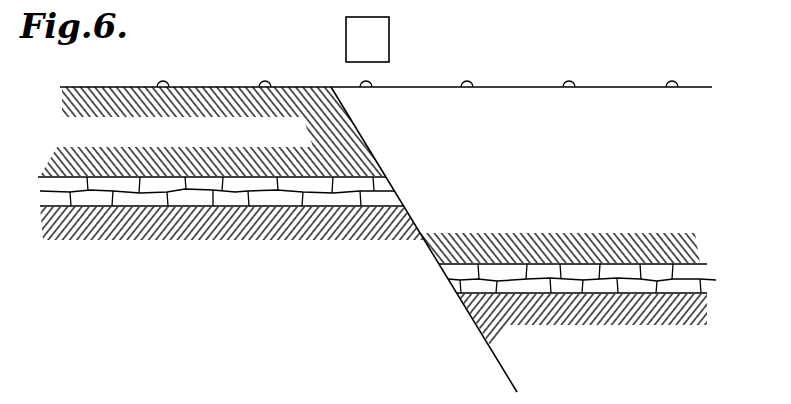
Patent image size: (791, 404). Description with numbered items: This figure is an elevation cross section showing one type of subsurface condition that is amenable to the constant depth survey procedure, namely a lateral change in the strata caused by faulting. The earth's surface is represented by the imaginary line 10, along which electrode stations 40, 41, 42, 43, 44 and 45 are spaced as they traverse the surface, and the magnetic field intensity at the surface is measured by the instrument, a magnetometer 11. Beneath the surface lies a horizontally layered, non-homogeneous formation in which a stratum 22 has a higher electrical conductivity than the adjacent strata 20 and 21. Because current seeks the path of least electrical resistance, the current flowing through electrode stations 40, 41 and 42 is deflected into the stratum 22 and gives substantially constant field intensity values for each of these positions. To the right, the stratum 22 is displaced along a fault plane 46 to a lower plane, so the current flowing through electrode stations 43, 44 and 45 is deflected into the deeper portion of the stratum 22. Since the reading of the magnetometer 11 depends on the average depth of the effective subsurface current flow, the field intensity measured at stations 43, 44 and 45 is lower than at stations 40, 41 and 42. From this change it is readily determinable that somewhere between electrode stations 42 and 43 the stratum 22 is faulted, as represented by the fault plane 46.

The imaginary line 10 is at (111, 87).
The magnetometer 11 is at (389, 41).
The stratum 20 is at (253, 134).
The stratum 21 is at (324, 268).
The stratum 22 is at (325, 215).
The electrode station 40 is at (162, 74).
The electrode station 41 is at (264, 74).
The electrode station 42 is at (365, 74).
The electrode station 43 is at (466, 74).
The electrode station 44 is at (569, 74).
The electrode station 45 is at (672, 74).
The fault plane 46 is at (402, 208).